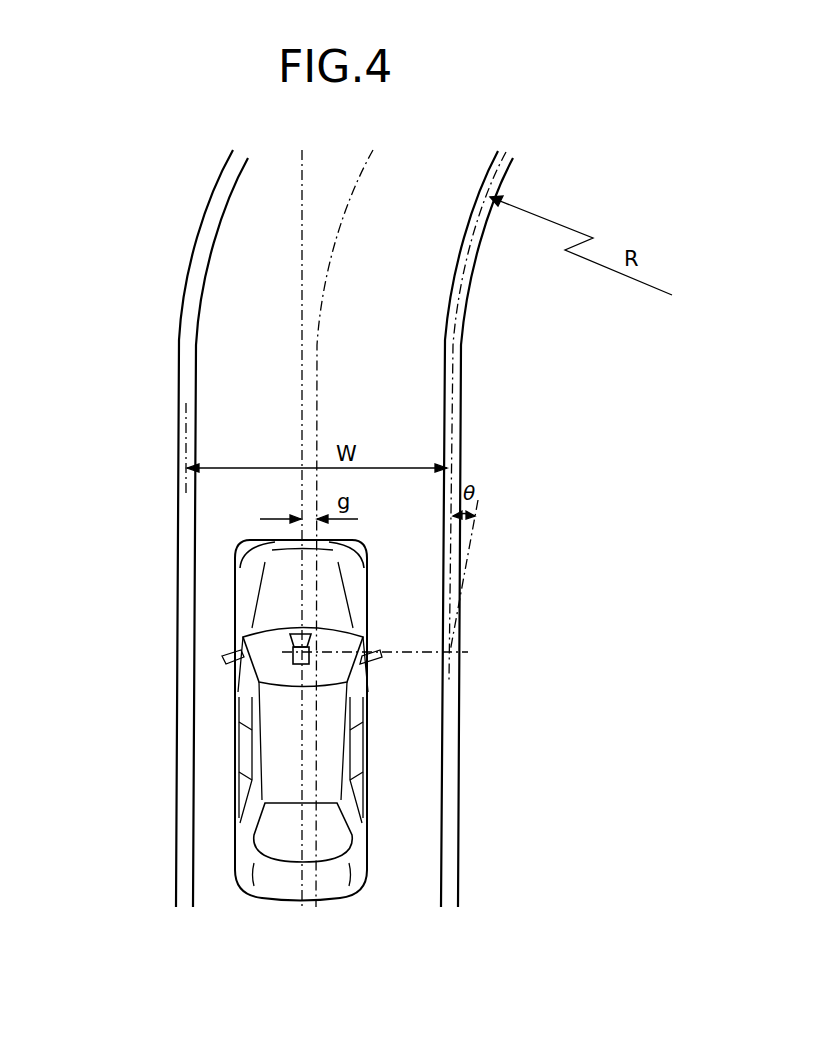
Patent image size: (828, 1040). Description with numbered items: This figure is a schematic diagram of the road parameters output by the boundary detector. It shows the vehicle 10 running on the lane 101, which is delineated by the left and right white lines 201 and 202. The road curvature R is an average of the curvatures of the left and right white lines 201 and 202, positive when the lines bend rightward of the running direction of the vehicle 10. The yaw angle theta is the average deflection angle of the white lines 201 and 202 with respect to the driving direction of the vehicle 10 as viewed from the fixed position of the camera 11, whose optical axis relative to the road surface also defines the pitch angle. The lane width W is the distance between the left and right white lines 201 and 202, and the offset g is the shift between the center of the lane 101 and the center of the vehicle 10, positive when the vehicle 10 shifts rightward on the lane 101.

The vehicle 10 is at (243, 597).
The camera 11 is at (250, 664).
The lane 101 is at (422, 695).
The left white line 201 is at (185, 362).
The right white line 202 is at (455, 395).